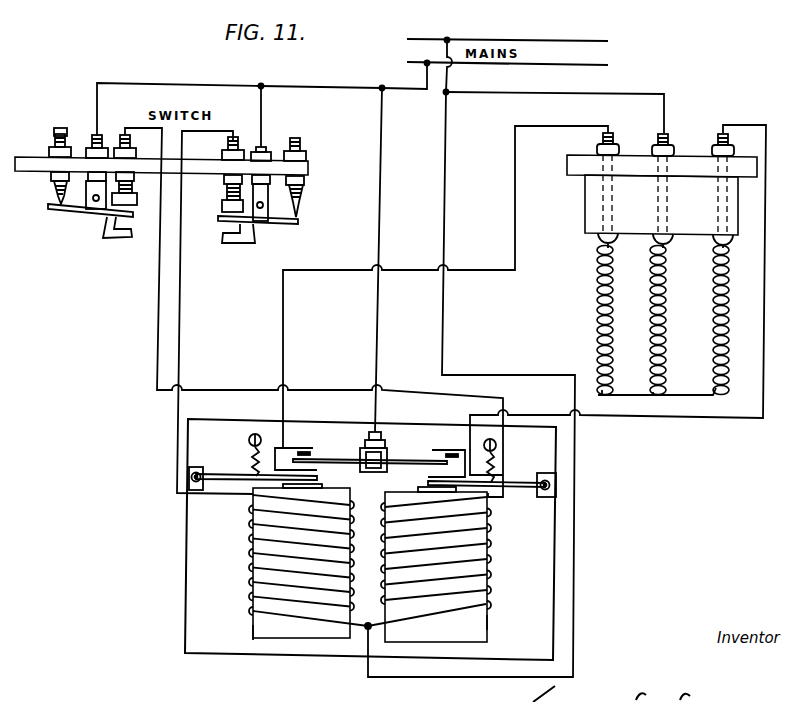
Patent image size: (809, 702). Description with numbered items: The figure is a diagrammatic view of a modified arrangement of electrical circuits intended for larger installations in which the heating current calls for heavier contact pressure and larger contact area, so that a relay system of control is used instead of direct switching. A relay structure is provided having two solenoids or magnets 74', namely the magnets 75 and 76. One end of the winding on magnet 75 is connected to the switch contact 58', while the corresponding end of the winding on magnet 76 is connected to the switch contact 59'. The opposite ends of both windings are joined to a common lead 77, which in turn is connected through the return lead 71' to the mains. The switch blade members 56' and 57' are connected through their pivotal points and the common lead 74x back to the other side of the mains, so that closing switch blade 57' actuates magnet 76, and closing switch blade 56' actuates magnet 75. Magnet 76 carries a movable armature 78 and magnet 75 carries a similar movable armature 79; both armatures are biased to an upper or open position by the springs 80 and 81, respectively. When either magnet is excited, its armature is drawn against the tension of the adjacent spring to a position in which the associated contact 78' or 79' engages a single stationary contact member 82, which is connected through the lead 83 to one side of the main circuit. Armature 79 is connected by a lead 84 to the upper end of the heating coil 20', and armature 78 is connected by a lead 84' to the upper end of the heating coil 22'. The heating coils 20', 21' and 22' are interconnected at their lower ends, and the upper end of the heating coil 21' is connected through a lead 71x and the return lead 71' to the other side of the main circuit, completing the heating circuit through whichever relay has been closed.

The common lead 74x is at (332, 83).
The return lead 71' is at (471, 358).
The lead 71x is at (667, 113).
The heating coil 20' is at (589, 264).
The heating coil 21' is at (673, 264).
The heating coil 22' is at (679, 264).
The lead 84' is at (618, 300).
The lead 84 is at (366, 311).
The lead 83 is at (377, 363).
The spring 81 is at (250, 453).
The movable armature 79 is at (253, 470).
The contact 79' is at (298, 447).
The stationary contact member 82 is at (335, 461).
The contact 78' is at (443, 453).
The spring 80 is at (498, 462).
The movable armature 78 is at (492, 497).
The solenoids or magnets 74' is at (369, 563).
The magnet 75 is at (253, 632).
The magnet 76 is at (477, 623).
The common lead 77 is at (458, 678).
The switch blade member 57' is at (90, 212).
The switch contact 58' is at (216, 204).
The switch contact 59' is at (135, 205).
The switch blade member 56' is at (258, 213).